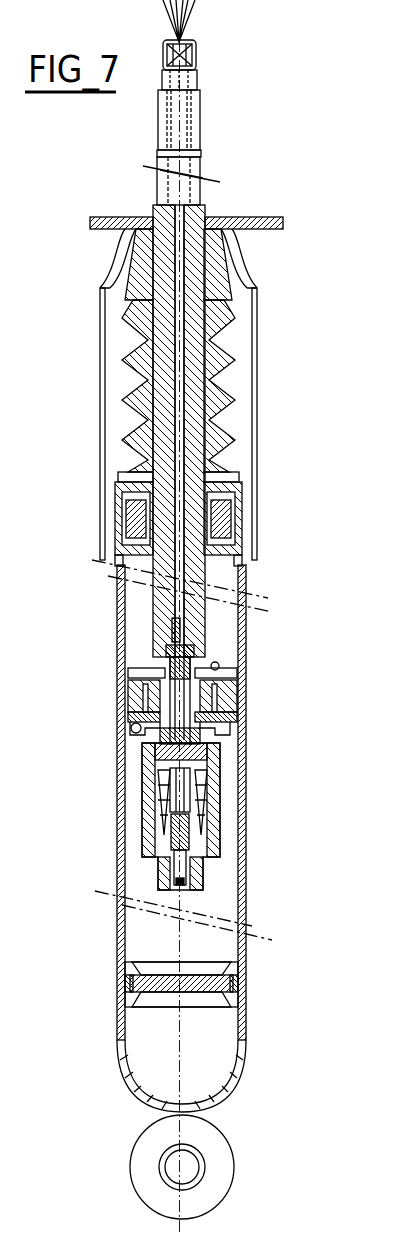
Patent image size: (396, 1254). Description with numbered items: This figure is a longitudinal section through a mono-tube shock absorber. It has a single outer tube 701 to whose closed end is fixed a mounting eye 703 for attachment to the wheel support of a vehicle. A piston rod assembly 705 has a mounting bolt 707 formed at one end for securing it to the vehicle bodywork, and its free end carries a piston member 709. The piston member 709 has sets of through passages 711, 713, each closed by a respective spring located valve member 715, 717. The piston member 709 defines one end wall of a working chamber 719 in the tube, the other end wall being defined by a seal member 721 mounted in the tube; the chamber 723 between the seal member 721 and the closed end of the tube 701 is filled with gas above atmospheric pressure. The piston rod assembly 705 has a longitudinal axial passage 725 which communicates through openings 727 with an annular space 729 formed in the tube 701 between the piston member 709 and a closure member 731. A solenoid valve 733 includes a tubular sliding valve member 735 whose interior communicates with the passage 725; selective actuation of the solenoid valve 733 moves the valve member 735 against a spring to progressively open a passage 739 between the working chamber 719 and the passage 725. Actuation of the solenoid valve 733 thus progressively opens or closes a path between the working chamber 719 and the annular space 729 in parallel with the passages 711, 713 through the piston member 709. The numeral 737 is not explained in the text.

The outer tube 701 is at (246, 769).
The mounting eye 703 is at (218, 1142).
The piston rod assembly 705 is at (200, 620).
The mounting bolt 707 is at (200, 113).
The piston member 709 is at (135, 692).
The through passages 711 is at (240, 692).
The through passages 713 is at (140, 700).
The spring located valve member 715 is at (236, 660).
The spring located valve member 717 is at (238, 722).
The working chamber 719 is at (225, 897).
The seal member 721 is at (227, 983).
The chamber 723 is at (224, 1049).
The longitudinal axial passage 725 is at (165, 632).
The openings 727 is at (160, 655).
The annular space 729 is at (240, 608).
The closure member 731 is at (230, 505).
The solenoid valve 733 is at (222, 812).
The tubular sliding valve member 735 is at (172, 848).
The valve spool 737 is at (170, 800).
The passage 739 is at (170, 866).